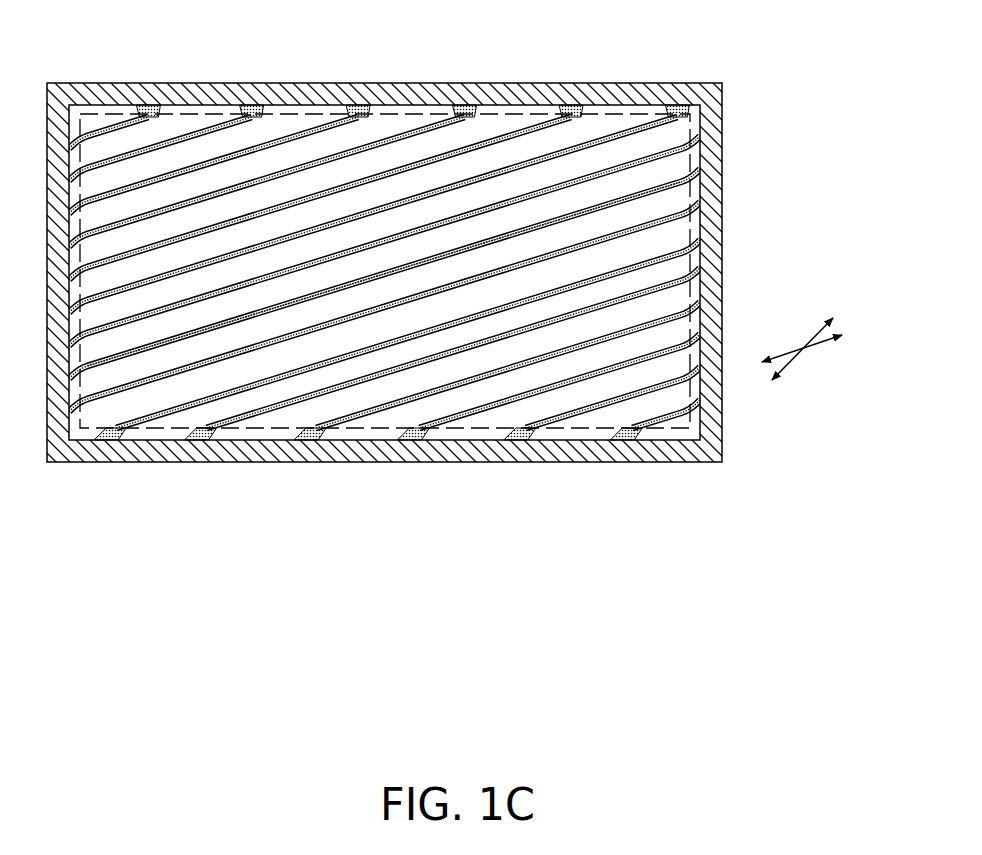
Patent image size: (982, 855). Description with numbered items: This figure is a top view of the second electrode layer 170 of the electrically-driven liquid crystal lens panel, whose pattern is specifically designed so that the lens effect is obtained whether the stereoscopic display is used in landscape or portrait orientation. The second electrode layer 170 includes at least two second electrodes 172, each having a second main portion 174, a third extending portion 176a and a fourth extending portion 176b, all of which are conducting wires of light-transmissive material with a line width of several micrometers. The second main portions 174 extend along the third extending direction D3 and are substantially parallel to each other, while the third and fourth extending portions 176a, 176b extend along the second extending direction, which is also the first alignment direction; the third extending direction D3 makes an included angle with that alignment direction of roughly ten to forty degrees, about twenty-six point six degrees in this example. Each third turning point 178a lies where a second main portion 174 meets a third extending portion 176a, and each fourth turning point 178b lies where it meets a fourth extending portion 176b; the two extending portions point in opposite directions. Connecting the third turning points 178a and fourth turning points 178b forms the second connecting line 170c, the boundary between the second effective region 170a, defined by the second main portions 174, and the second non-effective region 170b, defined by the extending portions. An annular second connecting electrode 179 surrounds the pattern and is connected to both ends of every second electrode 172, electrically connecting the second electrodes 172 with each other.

The second electrode layer 170 is at (702, 532).
The second effective region 170a is at (657, 204).
The second non-effective region 170b is at (703, 151).
The second connecting line 170c is at (688, 104).
The second electrode 172 is at (103, 543).
The second main portion 174 is at (313, 125).
The third extending portion 176a is at (164, 112).
The third turning point 178a is at (242, 110).
The fourth extending portion 176b is at (332, 437).
The fourth turning point 178b is at (334, 441).
The second connecting electrode 179 is at (408, 104).
The third extending direction D3 is at (826, 343).